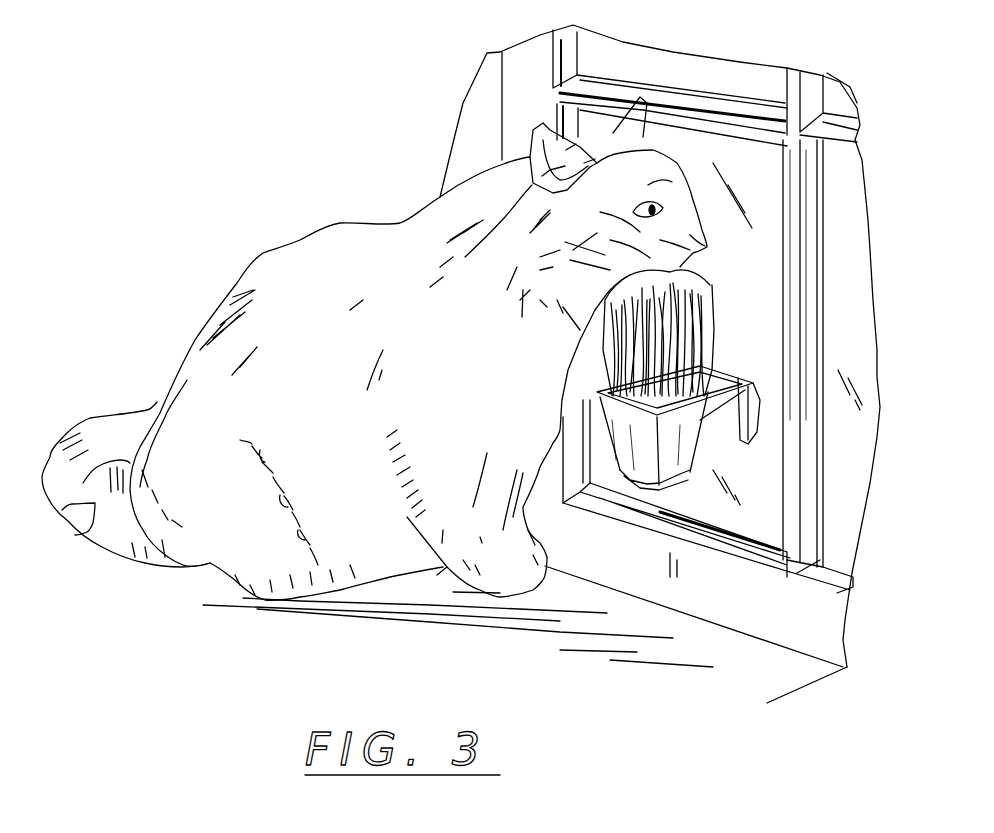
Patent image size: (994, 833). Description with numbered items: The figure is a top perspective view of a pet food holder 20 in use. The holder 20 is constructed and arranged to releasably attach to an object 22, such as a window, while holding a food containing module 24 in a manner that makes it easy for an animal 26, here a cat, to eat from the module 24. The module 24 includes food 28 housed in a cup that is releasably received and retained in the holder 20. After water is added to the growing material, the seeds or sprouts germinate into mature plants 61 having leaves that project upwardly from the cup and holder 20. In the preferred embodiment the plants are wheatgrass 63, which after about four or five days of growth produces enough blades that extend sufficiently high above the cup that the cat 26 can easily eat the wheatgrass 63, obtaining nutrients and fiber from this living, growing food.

The pet food holder 20 is at (670, 486).
The object 22 is at (766, 234).
The food containing module 24 is at (630, 480).
The animal 26 is at (222, 286).
The food 28 is at (723, 254).
The grown plants 61 is at (706, 294).
The wheatgrass 63 is at (710, 349).